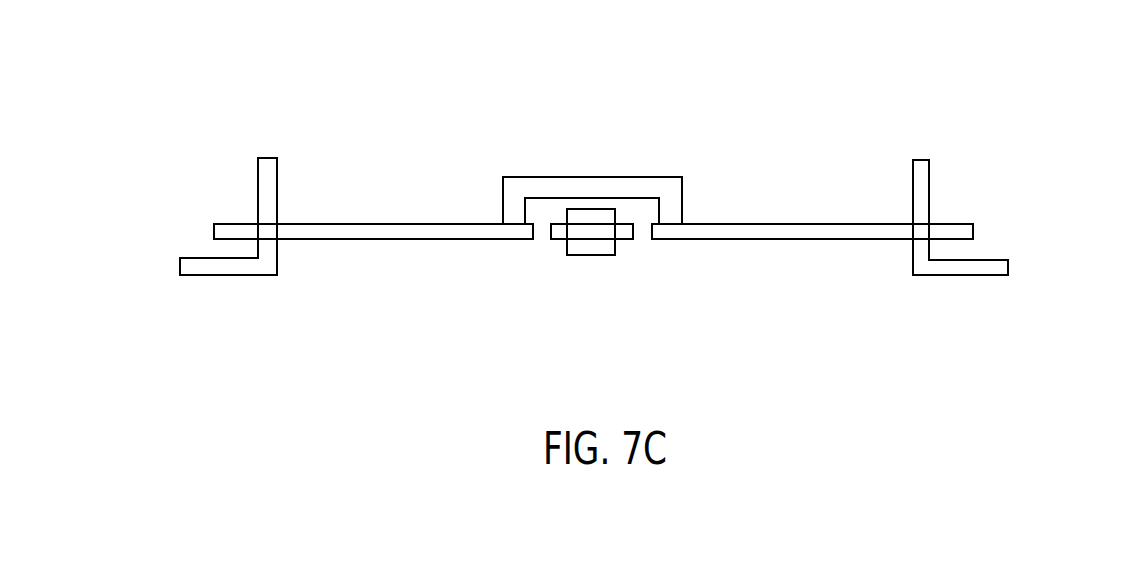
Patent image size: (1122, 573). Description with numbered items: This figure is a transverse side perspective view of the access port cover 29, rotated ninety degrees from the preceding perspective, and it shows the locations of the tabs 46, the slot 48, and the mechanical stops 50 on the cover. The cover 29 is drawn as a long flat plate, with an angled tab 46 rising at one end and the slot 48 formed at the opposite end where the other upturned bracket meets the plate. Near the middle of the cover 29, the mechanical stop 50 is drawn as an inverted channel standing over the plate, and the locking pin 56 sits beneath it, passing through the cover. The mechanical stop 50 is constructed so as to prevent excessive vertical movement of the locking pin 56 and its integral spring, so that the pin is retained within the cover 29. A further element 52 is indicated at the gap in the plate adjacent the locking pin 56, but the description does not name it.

The access port cover 29 is at (593, 182).
The tabs 46 is at (248, 176).
The slot 48 is at (992, 217).
The mechanical stops 50 is at (592, 141).
The slot 52 is at (522, 275).
The locking pin 56 is at (626, 277).